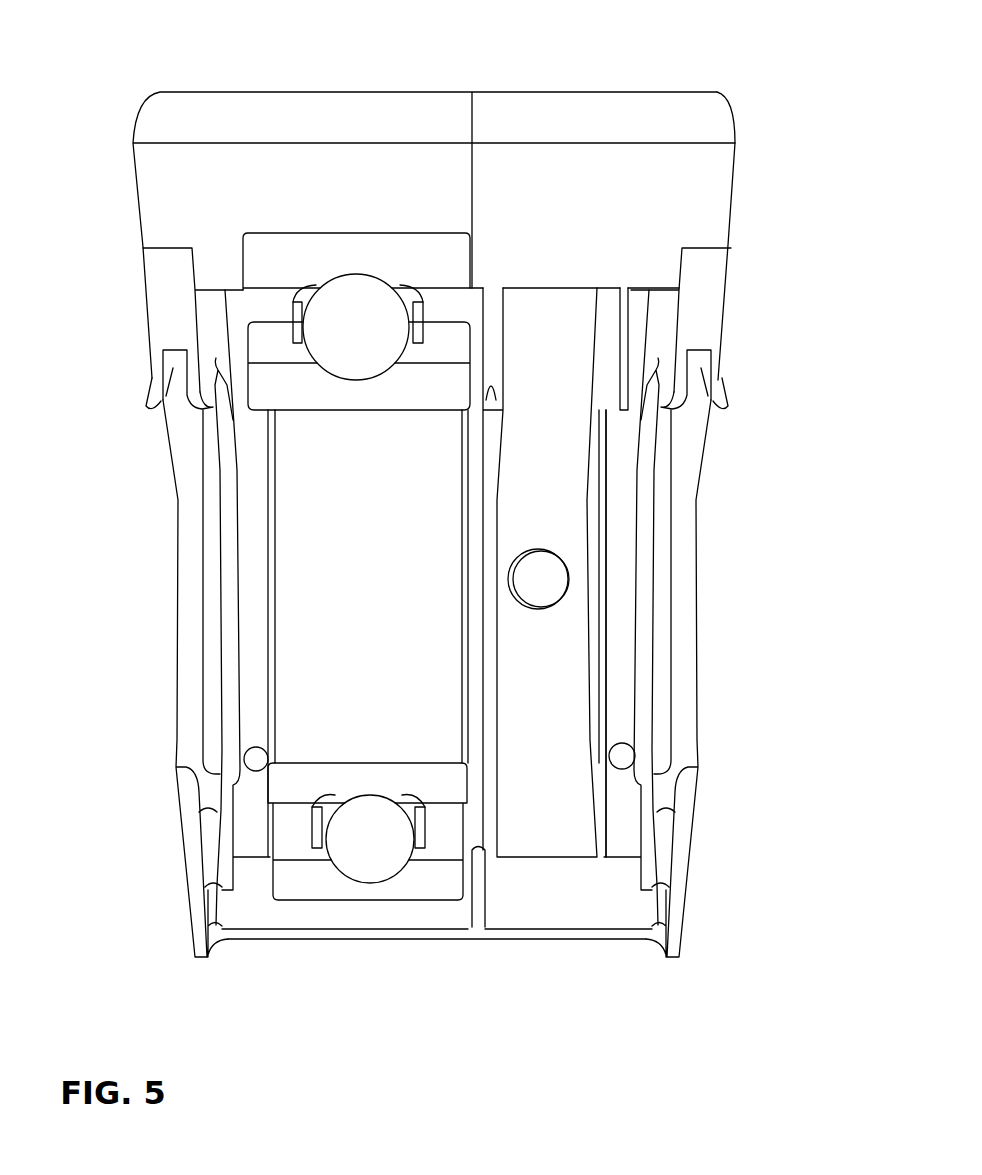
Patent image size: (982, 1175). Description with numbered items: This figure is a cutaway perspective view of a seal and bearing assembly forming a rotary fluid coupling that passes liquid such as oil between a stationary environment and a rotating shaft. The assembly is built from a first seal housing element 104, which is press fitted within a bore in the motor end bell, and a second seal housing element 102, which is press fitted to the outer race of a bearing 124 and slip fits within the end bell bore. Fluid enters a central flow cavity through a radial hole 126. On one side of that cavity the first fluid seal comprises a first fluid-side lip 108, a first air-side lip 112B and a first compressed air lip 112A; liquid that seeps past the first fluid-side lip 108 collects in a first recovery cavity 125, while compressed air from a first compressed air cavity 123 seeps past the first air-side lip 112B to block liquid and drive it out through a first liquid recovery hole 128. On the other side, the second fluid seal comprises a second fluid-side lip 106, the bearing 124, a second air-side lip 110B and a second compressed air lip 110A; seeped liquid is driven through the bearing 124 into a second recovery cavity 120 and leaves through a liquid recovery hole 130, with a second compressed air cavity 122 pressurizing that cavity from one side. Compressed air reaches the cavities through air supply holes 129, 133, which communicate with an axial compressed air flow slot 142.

The second seal housing element 102 is at (182, 160).
The first seal housing element 104 is at (529, 167).
The second fluid-side lip 106 is at (508, 352).
The first fluid-side lip 108 is at (623, 287).
The second compressed air lip 110A is at (142, 402).
The second air-side lip 110B is at (202, 407).
The first compressed air lip 112A is at (728, 389).
The first air-side lip 112B is at (660, 406).
The second recovery cavity 120 is at (258, 635).
The second compressed air cavity 122 is at (213, 687).
The first compressed air cavity 123 is at (658, 497).
The bearing 124 is at (348, 253).
The first recovery cavity 125 is at (610, 617).
The radial hole 126 is at (545, 588).
The first liquid recovery hole 128 is at (625, 752).
The air supply hole 129 is at (208, 837).
The liquid recovery hole 130 is at (258, 763).
The air supply hole 133 is at (477, 913).
The compressed air flow slot 142 is at (378, 933).